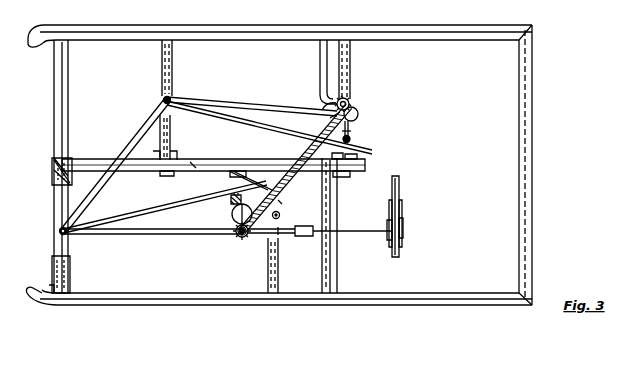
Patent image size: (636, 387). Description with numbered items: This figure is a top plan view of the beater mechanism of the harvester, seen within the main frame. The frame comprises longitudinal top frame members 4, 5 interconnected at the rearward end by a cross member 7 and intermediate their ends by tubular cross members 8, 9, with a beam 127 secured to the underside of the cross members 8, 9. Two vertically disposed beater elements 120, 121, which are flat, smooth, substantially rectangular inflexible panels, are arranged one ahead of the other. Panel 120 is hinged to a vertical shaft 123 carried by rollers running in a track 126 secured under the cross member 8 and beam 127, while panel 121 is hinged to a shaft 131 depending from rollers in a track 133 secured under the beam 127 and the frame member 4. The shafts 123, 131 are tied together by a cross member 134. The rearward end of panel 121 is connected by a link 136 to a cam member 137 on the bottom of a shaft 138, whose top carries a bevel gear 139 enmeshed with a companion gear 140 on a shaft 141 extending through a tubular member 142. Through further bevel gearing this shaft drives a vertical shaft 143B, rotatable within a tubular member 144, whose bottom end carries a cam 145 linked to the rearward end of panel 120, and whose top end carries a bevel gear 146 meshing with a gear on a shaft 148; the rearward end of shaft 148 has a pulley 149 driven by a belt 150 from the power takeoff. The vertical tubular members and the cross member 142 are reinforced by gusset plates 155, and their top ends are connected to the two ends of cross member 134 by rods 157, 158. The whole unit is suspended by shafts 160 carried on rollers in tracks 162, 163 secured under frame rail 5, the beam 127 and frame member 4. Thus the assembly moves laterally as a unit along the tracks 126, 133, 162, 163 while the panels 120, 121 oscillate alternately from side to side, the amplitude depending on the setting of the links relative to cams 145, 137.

The longitudinal top frame member 4 is at (268, 29).
The longitudinal top frame member 5 is at (238, 306).
The cross member 7 is at (533, 145).
The tubular cross member 8 is at (68, 97).
The tubular cross member 9 is at (320, 73).
The beater element 120 is at (150, 207).
The beater element 121 is at (258, 126).
The vertical shaft 123 is at (60, 234).
The track 126 is at (62, 203).
The beam 127 is at (88, 160).
The shaft 131 is at (164, 99).
The track 133 is at (173, 63).
The cross member 134 is at (98, 193).
The link 136 is at (351, 134).
The cam member 137 is at (358, 114).
The shaft 138 is at (349, 103).
The bevel gear 139 is at (349, 99).
The companion gear 140 is at (326, 108).
The shaft 141 is at (333, 119).
The tubular member 142 is at (304, 153).
The shaft 143B is at (240, 239).
The bracket 144 is at (230, 201).
The cam 145 is at (232, 216).
The bevel gear 146 is at (238, 237).
The shaft 148 is at (262, 236).
The pulley 149 is at (402, 213).
The belt 150 is at (399, 183).
The gusset plate 155 is at (277, 204).
The rod 157 is at (131, 238).
The rod 158 is at (248, 101).
The shaft 160 is at (358, 121).
The track 162 is at (279, 268).
The track 163 is at (350, 63).